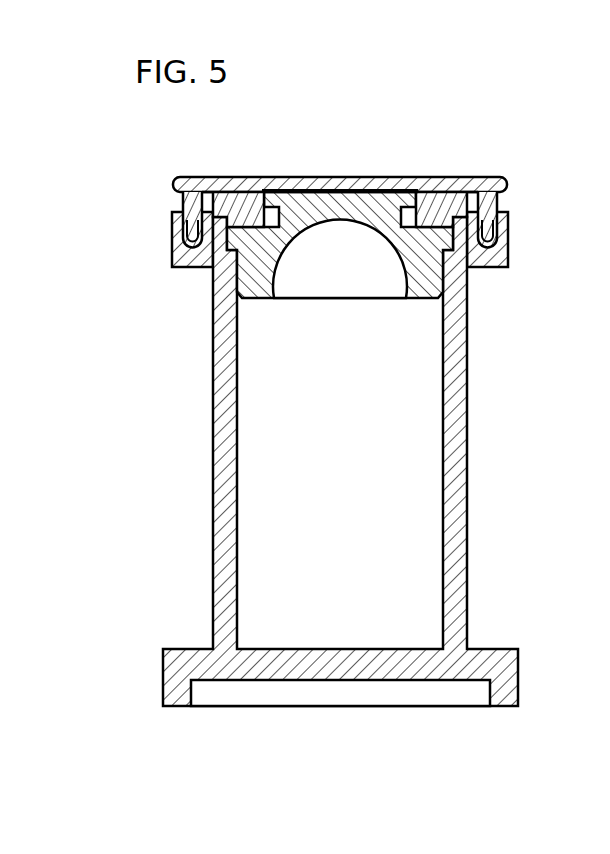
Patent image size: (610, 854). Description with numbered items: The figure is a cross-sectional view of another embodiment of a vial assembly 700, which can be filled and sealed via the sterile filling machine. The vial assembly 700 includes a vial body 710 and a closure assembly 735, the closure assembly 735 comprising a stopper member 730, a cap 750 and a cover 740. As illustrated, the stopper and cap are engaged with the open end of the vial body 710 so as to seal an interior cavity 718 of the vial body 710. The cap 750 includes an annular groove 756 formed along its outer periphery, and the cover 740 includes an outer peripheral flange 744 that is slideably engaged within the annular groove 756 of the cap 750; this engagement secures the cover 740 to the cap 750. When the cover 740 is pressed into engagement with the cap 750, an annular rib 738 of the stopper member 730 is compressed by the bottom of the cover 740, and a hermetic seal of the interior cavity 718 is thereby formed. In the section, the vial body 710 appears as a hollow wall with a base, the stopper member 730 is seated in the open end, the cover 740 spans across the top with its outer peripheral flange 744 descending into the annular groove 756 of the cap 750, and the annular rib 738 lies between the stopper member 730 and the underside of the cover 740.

The vial assembly 700 is at (409, 166).
The vial body 710 is at (473, 471).
The interior cavity 718 is at (422, 568).
The stopper member 730 is at (262, 299).
The closure assembly 735 is at (165, 223).
The annular rib 738 is at (397, 187).
The cover 740 is at (454, 172).
The outer peripheral flange 744 is at (495, 204).
The cap 750 is at (515, 233).
The annular groove 756 is at (490, 252).